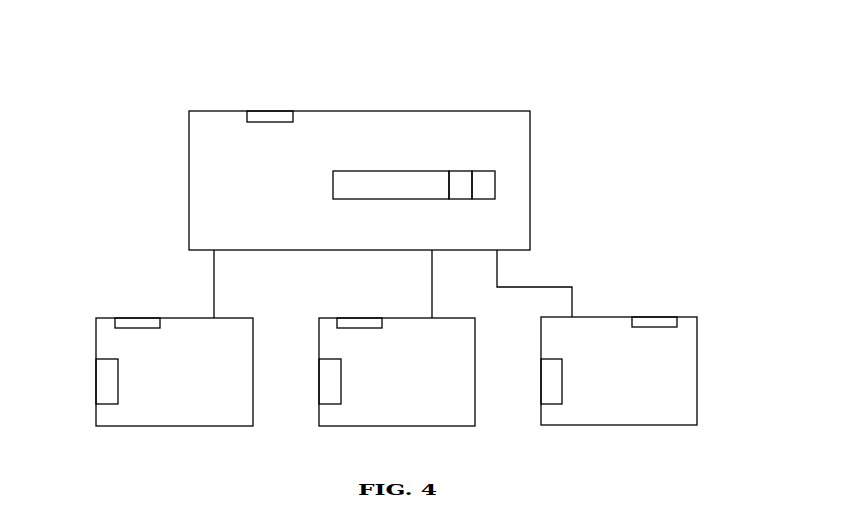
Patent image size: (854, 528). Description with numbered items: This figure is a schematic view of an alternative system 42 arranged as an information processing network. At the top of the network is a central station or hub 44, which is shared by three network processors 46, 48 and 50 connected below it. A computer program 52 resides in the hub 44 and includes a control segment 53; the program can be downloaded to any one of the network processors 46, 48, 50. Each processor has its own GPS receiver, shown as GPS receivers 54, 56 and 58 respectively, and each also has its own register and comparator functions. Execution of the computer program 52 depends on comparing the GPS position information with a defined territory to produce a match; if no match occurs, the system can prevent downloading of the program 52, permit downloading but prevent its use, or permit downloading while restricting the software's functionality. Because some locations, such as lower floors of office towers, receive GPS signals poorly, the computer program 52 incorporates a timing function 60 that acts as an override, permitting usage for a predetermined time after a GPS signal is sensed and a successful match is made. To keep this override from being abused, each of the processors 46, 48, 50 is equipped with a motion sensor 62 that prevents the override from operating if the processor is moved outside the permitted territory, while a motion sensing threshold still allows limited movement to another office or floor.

The alternative system 42 is at (156, 183).
The central station or hub 44 is at (518, 137).
The processor 46 is at (175, 418).
The processor 48 is at (463, 361).
The processor 50 is at (687, 373).
The computer program 52 is at (373, 182).
The control segment 53 is at (482, 193).
The GPS receiver 54 is at (102, 389).
The GPS receiver 56 is at (332, 382).
The GPS receiver 58 is at (555, 389).
The timing function 60 is at (462, 180).
The motion sensor 62 is at (267, 116).